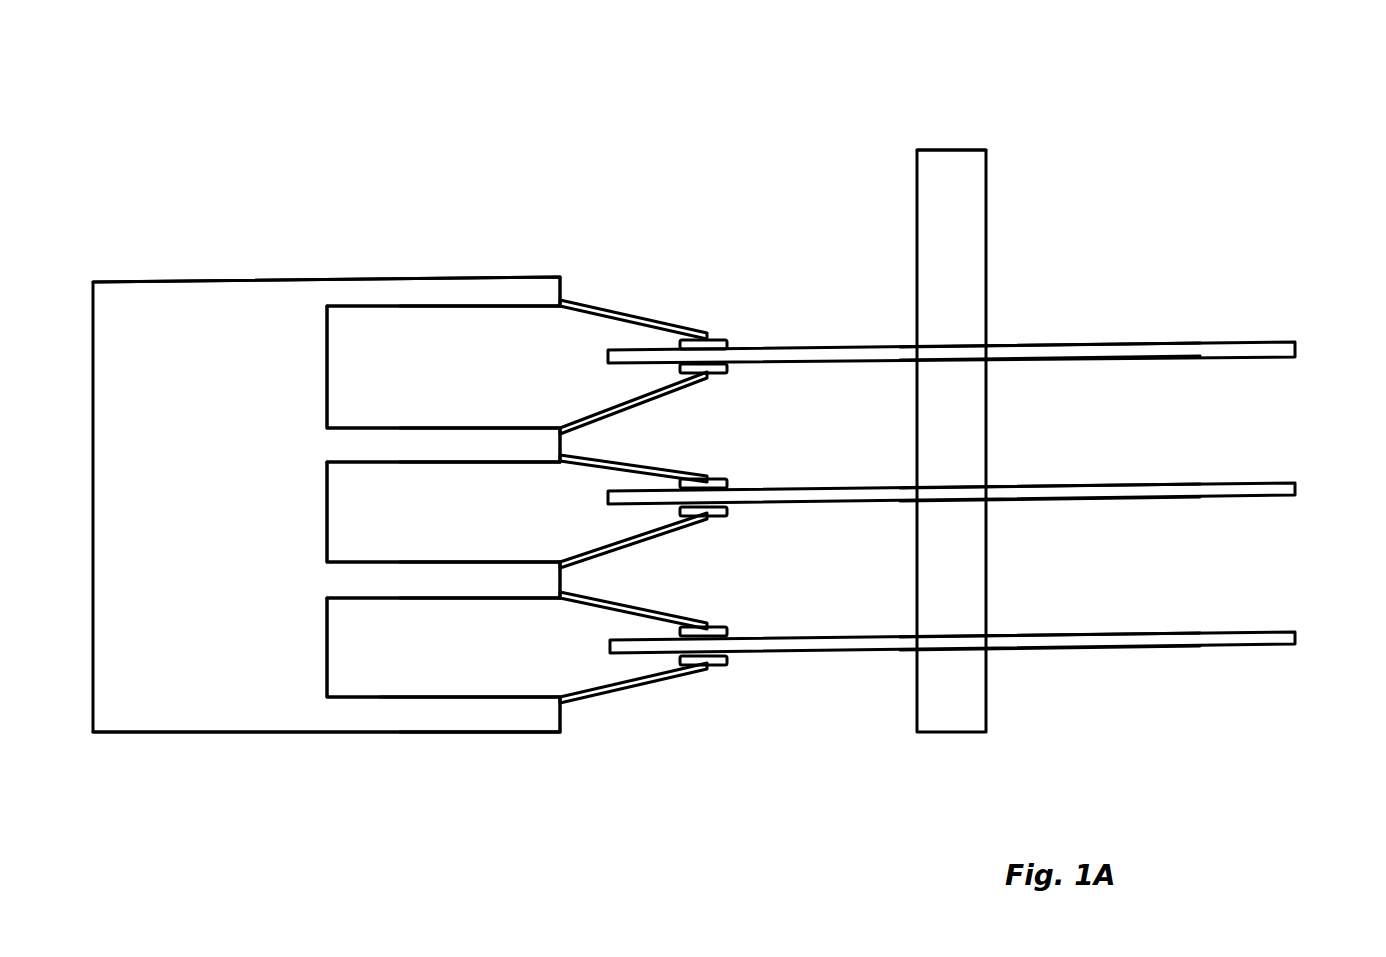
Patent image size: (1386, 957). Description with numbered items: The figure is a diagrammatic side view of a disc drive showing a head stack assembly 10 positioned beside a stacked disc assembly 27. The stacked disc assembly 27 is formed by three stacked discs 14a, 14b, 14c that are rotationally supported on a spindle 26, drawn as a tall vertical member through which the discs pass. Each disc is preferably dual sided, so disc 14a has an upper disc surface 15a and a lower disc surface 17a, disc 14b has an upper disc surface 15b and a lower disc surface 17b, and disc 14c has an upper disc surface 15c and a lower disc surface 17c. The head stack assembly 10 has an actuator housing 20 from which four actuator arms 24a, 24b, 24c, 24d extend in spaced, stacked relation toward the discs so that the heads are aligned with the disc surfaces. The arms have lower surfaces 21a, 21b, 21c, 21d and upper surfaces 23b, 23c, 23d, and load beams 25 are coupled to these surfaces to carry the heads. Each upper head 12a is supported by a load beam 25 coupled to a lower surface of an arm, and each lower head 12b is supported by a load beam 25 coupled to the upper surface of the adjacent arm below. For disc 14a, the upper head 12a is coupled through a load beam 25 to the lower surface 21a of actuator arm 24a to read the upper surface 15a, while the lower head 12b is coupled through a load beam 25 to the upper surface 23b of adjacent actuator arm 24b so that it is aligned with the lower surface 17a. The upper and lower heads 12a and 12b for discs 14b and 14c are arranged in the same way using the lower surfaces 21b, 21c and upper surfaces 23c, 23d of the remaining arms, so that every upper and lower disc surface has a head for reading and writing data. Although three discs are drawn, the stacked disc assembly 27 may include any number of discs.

The head stack assembly 10 is at (262, 248).
The actuator housing 20 is at (326, 504).
The actuator arm 24a is at (398, 268).
The actuator arm 24b is at (362, 385).
The actuator arm 24c is at (345, 542).
The actuator arm 24d is at (332, 676).
The lower surface of actuator arm 21a is at (380, 318).
The lower surface of actuator arm 21b is at (384, 474).
The lower surface of actuator arm 21c is at (400, 608).
The lower surface of actuator arm 21d is at (420, 738).
The upper surface of actuator arm 23b is at (414, 428).
The upper surface of actuator arm 23c is at (400, 562).
The upper surface of actuator arm 23d is at (380, 697).
The load beam 25 is at (578, 298).
The upper head 12a is at (710, 338).
The lower head 12b is at (725, 373).
The disc 14a is at (1210, 322).
The disc 14b is at (1292, 470).
The disc 14c is at (1280, 620).
The upper disc surface 15a is at (1045, 347).
The upper disc surface 15b is at (1045, 488).
The upper disc surface 15c is at (1045, 637).
The lower disc surface 17a is at (1022, 363).
The lower disc surface 17b is at (1078, 504).
The lower disc surface 17c is at (1110, 650).
The spindle 26 is at (1000, 194).
The stacked disc assembly 27 is at (912, 128).